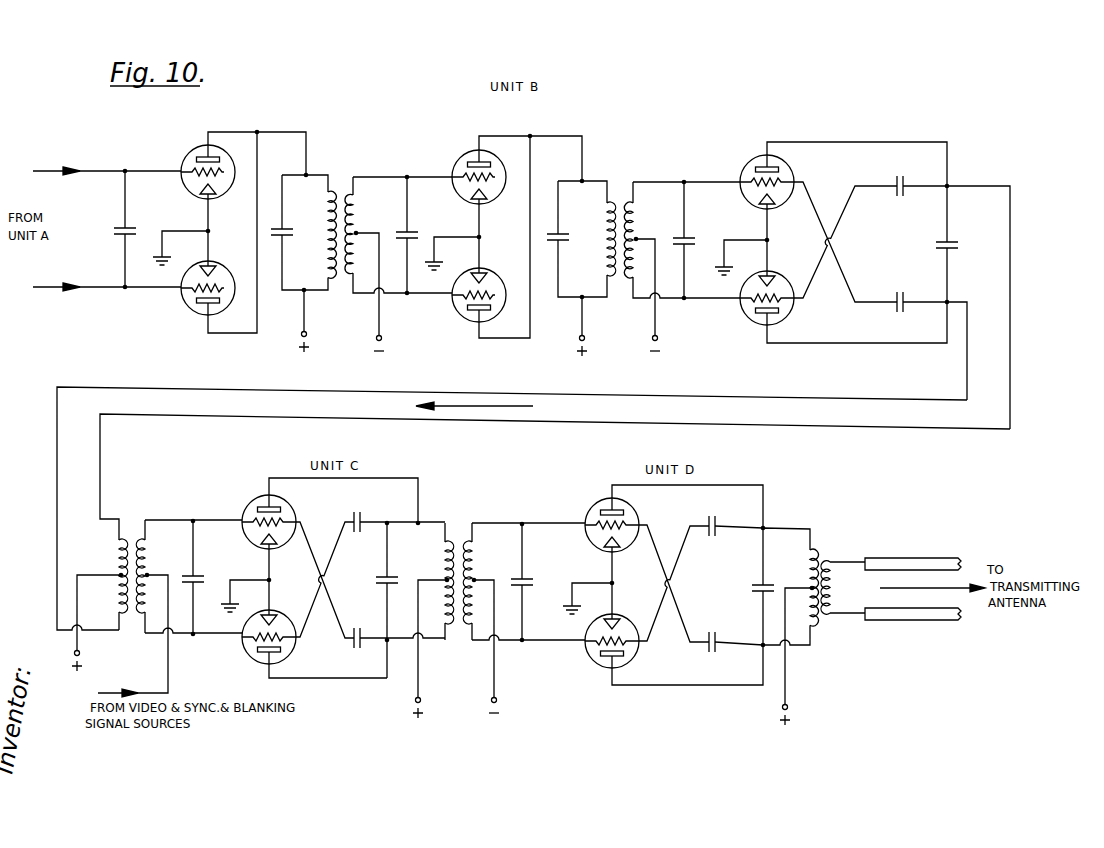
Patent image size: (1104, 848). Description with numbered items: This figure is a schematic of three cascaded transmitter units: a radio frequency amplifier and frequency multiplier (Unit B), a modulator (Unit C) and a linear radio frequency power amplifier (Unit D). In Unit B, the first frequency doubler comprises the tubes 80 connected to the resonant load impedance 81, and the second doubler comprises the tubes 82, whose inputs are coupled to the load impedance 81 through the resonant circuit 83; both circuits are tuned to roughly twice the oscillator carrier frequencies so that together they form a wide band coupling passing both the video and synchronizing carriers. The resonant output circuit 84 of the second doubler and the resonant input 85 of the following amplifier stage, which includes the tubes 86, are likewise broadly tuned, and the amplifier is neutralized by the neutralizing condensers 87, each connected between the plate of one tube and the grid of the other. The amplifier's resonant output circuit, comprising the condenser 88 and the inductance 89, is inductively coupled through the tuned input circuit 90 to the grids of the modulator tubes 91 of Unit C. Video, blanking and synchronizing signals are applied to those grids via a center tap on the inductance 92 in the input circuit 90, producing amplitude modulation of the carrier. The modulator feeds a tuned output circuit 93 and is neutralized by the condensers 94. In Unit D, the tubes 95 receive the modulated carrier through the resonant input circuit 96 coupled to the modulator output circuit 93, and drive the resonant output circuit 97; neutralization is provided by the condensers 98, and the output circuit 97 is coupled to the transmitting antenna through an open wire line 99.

The tubes 80 is at (190, 151).
The resonant load impedance 81 is at (303, 262).
The tubes 82 is at (462, 166).
The resonant circuit 83 is at (398, 263).
The resonant output circuit 84 is at (581, 267).
The resonant input 85 is at (682, 265).
The tubes 86 is at (751, 170).
The neutralizing condensers 87 is at (899, 246).
The condenser 88 is at (958, 244).
The inductance 89 is at (100, 605).
The tuned input circuit 90 is at (170, 608).
The modulator tubes 91 is at (244, 507).
The inductance 92 is at (142, 622).
The tuned output circuit 93 is at (415, 619).
The condensers 94 is at (361, 571).
The tubes 95 is at (600, 504).
The resonant input circuit 96 is at (524, 617).
The resonant output circuit 97 is at (785, 625).
The condensers 98 is at (717, 575).
The open wire line 99 is at (891, 601).